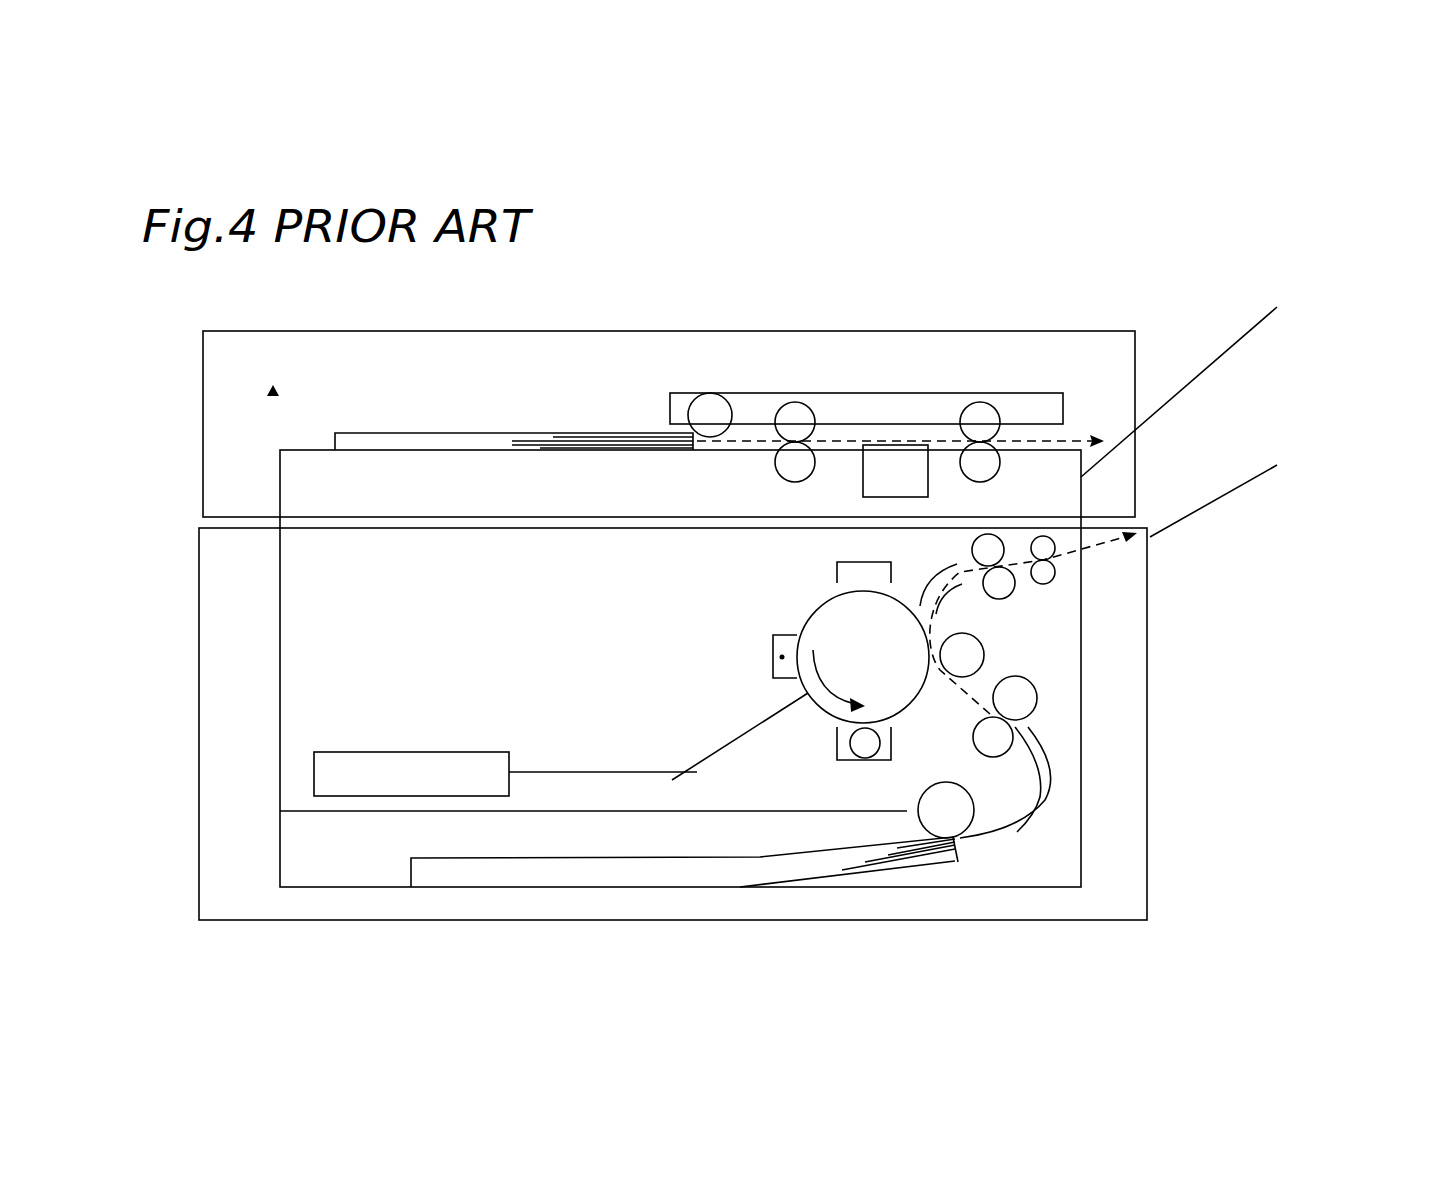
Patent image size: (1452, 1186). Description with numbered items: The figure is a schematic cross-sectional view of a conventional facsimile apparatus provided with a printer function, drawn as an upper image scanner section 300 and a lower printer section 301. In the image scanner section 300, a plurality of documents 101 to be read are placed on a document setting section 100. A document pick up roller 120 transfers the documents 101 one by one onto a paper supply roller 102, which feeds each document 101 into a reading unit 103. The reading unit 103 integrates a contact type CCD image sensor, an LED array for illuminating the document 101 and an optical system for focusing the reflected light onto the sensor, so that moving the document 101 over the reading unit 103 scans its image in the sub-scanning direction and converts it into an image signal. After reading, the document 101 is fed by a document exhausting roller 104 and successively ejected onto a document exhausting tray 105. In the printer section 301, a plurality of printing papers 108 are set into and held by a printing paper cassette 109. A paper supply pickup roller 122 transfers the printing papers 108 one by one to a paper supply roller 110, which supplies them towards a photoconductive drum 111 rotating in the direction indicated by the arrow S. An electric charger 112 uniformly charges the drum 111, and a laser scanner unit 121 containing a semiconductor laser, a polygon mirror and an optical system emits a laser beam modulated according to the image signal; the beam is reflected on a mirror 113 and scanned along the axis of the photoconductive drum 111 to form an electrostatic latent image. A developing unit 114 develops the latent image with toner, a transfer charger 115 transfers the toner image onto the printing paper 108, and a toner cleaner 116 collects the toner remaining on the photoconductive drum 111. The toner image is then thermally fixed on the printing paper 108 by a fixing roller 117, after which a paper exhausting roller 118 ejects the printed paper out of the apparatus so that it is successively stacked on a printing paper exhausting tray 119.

The image scanner section 300 is at (297, 334).
The documents 101 is at (363, 439).
The document pick up roller 120 is at (710, 403).
The paper supply roller 102 is at (790, 462).
The reading unit 103 is at (885, 458).
The document exhausting roller 104 is at (970, 414).
The document exhausting tray 105 is at (1210, 360).
The printer section 301 is at (281, 844).
The document setting section 100 is at (302, 452).
The toner cleaner 116 is at (840, 572).
The photoconductive drum 111 is at (825, 618).
The electric charger 112 is at (773, 660).
The developing unit 114 is at (840, 740).
The laser scanner unit 121 is at (329, 764).
The mirror 113 is at (708, 767).
The printing paper cassette 109 is at (331, 856).
The printing papers 108 is at (450, 866).
The paper supply pickup roller 122 is at (957, 820).
The paper supply roller 110 is at (1010, 742).
The transfer charger 115 is at (962, 655).
The fixing roller 117 is at (978, 553).
The paper exhausting roller 118 is at (1048, 570).
The printing paper exhausting tray 119 is at (1242, 488).